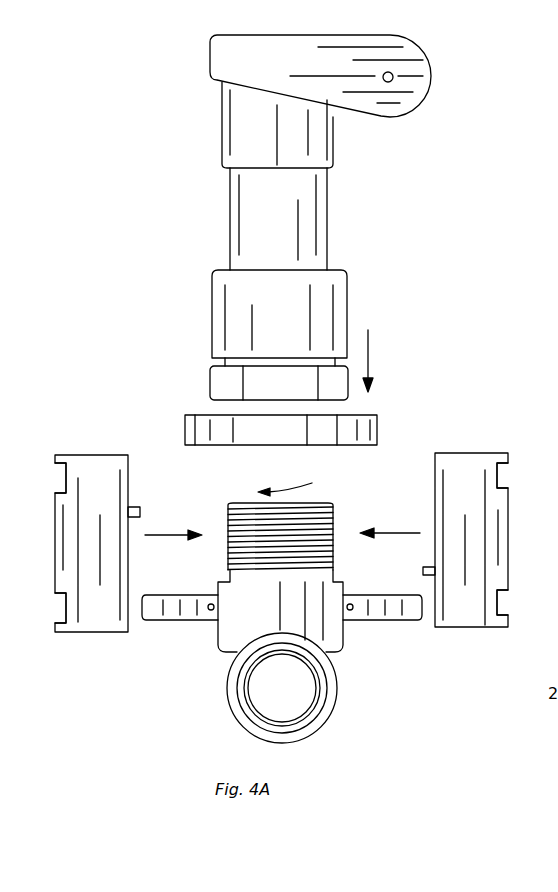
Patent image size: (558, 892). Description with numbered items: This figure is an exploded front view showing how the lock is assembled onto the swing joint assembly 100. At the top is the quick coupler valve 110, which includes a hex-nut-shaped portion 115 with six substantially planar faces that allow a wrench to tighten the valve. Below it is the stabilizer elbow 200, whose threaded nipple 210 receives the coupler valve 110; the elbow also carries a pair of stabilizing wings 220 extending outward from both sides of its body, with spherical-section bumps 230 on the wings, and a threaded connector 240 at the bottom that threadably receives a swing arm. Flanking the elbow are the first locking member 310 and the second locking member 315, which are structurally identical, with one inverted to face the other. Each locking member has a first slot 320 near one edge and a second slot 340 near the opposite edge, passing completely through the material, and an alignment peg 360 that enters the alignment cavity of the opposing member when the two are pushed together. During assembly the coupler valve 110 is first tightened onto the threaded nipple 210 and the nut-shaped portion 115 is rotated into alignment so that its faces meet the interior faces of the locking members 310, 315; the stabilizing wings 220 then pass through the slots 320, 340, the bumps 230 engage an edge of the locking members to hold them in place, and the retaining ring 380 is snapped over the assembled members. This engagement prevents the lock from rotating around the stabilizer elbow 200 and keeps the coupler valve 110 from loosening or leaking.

The swing joint assembly 100 is at (118, 95).
The quick coupler valve 110 is at (222, 124).
The hex-nut-shaped portion 115 is at (282, 373).
The stabilizer elbow 200 is at (218, 645).
The threaded nipple 210 is at (333, 525).
The stabilizing wing 220 is at (158, 622).
The bumps 230 is at (350, 604).
The threaded connector 240 is at (323, 708).
The first locking member 310 is at (435, 500).
The second locking member 315 is at (107, 455).
The first slot 320 is at (58, 608).
The second slot 340 is at (53, 472).
The alignment peg 360 is at (140, 507).
The retaining ring 380 is at (377, 430).